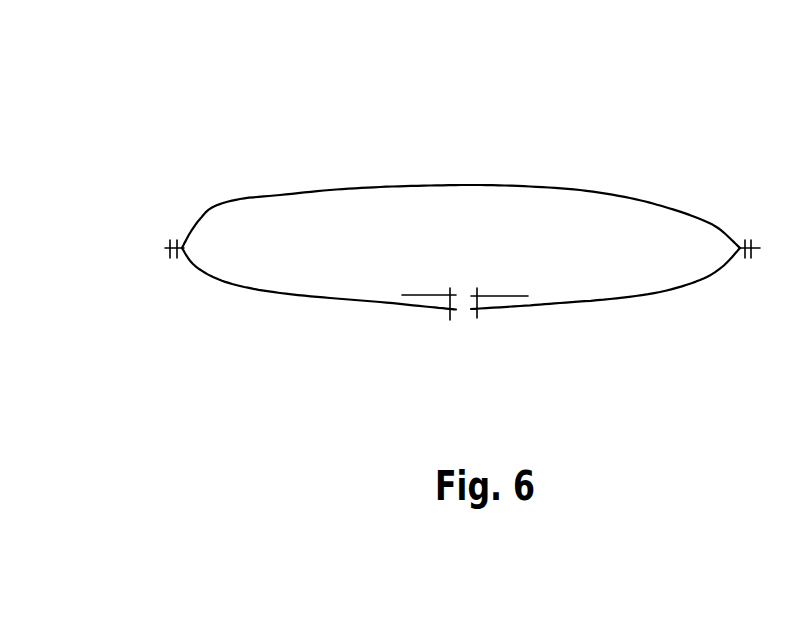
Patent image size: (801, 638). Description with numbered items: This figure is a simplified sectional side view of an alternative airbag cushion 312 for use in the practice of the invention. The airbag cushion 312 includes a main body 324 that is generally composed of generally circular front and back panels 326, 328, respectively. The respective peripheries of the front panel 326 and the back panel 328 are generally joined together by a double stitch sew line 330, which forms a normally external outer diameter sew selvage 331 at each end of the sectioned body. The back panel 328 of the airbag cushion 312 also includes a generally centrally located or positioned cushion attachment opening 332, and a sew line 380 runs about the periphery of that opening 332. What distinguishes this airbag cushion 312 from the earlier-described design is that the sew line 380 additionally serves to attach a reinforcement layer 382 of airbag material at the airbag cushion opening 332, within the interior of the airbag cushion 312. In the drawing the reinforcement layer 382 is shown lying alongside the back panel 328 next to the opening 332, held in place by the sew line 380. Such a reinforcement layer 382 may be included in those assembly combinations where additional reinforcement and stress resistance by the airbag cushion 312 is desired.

The airbag cushion 312 is at (467, 217).
The main body 324 is at (550, 188).
The front panel 326 is at (461, 179).
The back panel 328 is at (624, 299).
The double stitch sew line 330 is at (178, 259).
The outer diameter sew selvage 331 is at (165, 245).
The cushion attachment opening 332 is at (468, 323).
The sew line 380 is at (447, 289).
The reinforcement layer 382 is at (507, 288).